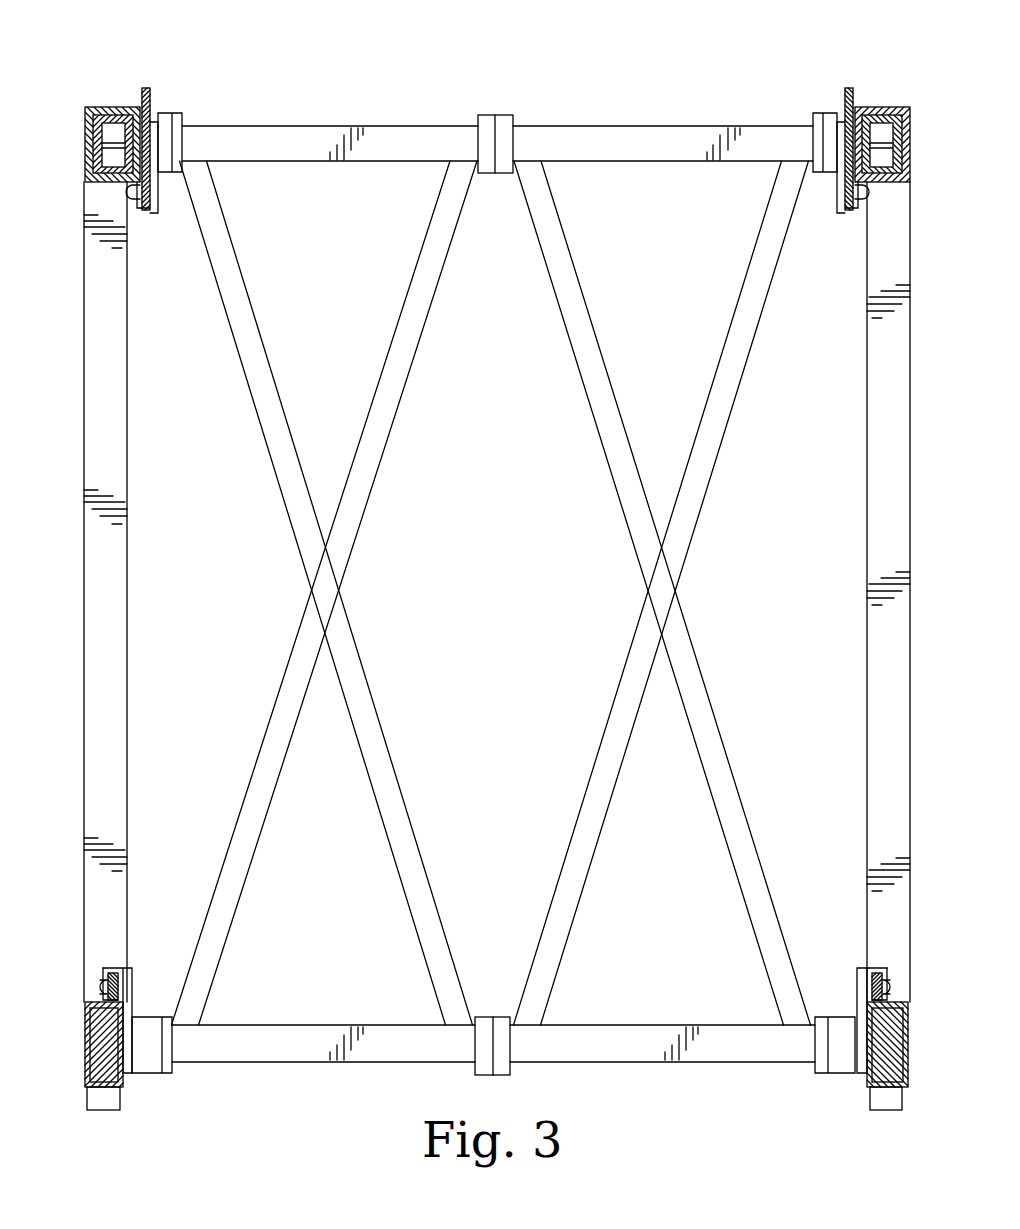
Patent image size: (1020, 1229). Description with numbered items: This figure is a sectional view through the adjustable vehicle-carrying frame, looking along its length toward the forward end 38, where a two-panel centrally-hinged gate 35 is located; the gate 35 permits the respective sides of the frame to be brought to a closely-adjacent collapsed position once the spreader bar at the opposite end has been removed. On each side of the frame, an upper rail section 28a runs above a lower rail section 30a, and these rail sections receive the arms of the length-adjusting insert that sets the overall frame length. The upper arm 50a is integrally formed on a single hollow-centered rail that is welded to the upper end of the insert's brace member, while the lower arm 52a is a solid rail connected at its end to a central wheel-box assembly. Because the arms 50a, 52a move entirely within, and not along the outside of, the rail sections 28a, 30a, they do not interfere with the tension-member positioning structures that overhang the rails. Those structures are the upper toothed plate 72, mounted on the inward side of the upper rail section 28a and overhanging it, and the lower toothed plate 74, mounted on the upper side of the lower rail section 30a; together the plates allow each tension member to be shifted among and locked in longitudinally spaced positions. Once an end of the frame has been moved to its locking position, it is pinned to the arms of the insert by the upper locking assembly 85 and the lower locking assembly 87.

The upper rail section 28a is at (120, 107).
The lower rail section 30a is at (127, 1077).
The two-panel centrally-hinged gate 35 is at (622, 125).
The forward end 38 is at (690, 106).
The upper arm 50a is at (90, 138).
The lower arm 52a is at (82, 1067).
The upper toothed plate 72 is at (150, 97).
The lower toothed plate 74 is at (113, 973).
The upper locking assembly 85 is at (158, 200).
The lower locking assembly 87 is at (136, 999).